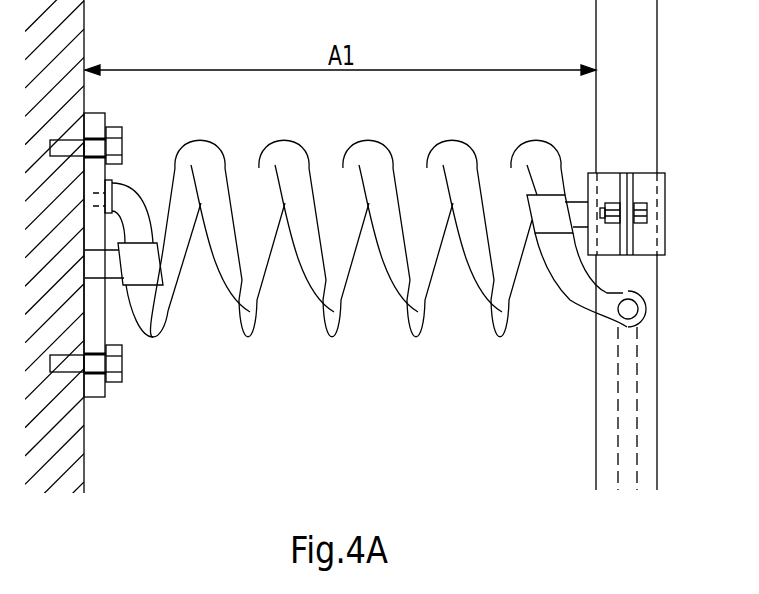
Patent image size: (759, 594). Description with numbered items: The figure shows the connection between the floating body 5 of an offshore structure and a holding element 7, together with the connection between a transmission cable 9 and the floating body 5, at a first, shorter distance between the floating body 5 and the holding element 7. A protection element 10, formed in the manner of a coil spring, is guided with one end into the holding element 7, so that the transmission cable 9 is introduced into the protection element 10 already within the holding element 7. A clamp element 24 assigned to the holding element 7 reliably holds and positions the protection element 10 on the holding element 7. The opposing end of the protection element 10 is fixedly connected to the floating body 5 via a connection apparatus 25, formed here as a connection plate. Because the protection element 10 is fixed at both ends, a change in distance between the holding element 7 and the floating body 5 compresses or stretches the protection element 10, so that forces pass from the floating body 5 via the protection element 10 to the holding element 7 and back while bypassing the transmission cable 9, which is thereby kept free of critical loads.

The floating body 5 is at (73, 448).
The holding element 7 is at (647, 97).
The transmission cable 9 is at (94, 193).
The protection element 10 is at (325, 332).
The clamp element 24 is at (662, 215).
The connection apparatus 25 is at (98, 322).